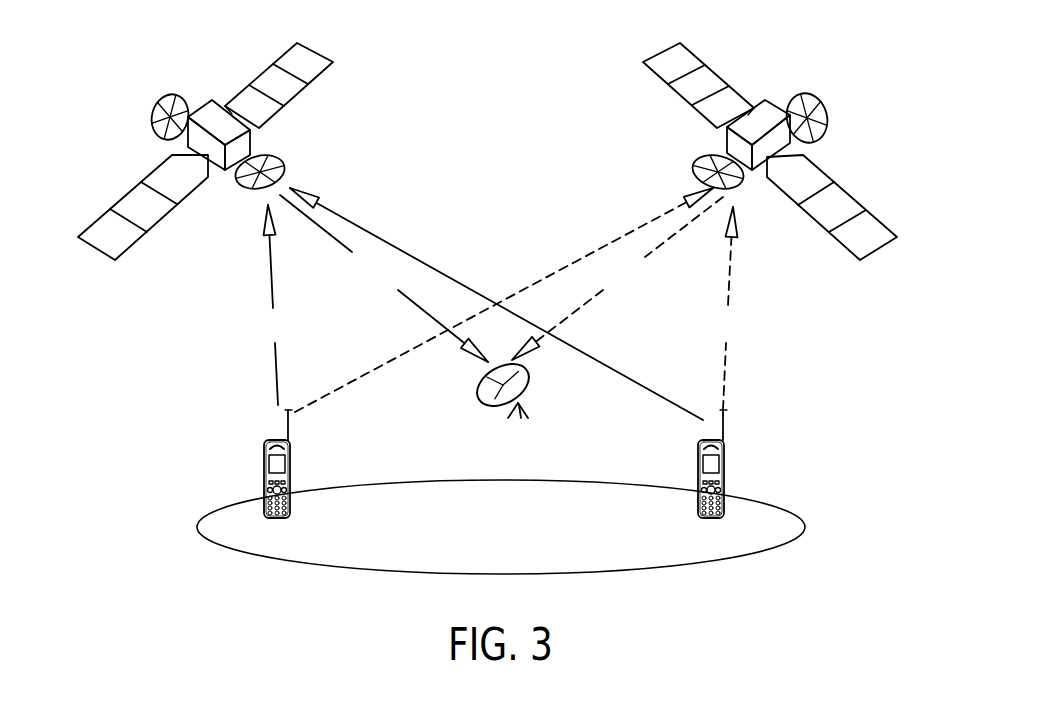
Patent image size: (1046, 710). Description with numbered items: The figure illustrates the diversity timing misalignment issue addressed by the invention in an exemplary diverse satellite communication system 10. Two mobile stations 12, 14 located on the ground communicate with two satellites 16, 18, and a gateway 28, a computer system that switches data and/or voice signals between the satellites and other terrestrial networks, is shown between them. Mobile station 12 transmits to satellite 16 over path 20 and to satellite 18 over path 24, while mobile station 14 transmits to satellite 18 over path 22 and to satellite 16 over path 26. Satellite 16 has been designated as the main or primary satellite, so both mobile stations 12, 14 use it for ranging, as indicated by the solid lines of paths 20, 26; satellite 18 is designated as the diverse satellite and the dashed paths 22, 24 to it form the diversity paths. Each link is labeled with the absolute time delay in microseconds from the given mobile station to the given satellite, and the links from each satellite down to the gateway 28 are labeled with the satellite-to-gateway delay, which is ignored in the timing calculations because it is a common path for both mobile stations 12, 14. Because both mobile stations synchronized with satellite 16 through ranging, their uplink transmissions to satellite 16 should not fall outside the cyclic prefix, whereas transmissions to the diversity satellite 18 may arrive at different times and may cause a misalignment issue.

The communication system 10 is at (463, 78).
The mobile station 12 is at (278, 518).
The mobile station 14 is at (728, 518).
The satellite 16 is at (192, 145).
The satellite 18 is at (777, 101).
The path 20 is at (268, 257).
The path 22 is at (731, 267).
The path 24 is at (662, 213).
The path 26 is at (335, 212).
The gateway 28 is at (525, 388).